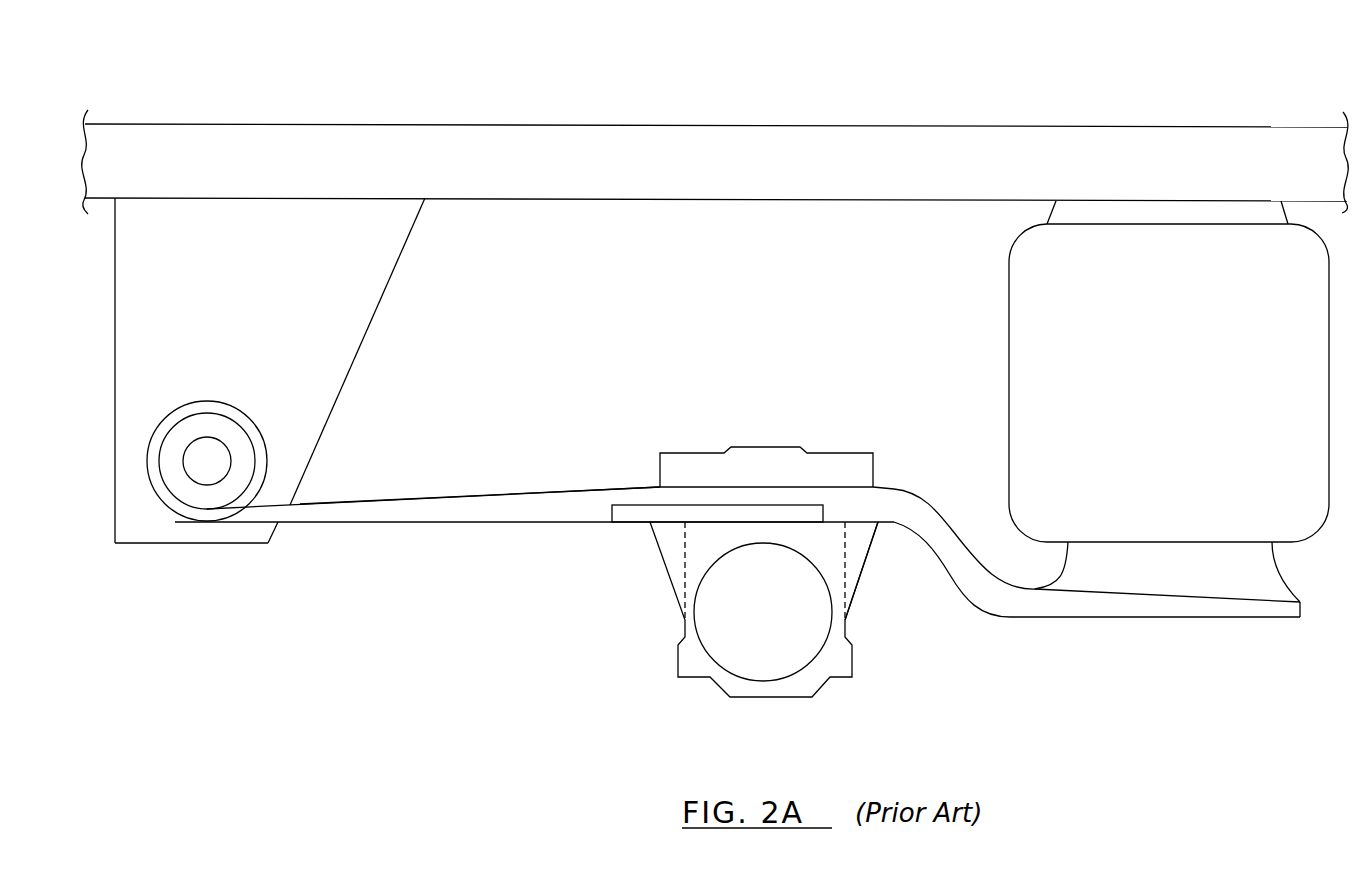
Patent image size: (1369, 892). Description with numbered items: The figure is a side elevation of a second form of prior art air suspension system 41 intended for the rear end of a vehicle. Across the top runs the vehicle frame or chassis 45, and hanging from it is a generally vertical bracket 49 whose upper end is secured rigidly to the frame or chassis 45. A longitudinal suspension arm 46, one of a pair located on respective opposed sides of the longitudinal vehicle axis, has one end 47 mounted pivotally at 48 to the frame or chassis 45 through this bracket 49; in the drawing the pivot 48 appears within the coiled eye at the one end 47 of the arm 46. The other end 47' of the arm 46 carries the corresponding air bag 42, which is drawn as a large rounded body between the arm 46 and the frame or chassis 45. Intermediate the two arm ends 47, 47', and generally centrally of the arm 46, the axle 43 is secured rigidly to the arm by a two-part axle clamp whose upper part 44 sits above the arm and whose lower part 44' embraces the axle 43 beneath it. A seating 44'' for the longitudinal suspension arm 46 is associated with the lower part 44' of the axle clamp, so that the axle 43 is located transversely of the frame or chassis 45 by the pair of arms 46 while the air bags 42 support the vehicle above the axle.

The prior art air suspension system 41 is at (515, 552).
The air bag 42 is at (1184, 401).
The axle 43 is at (774, 623).
The axle clamp 44 is at (742, 443).
The lower part of the axle clamp 44' is at (764, 637).
The seating 44'' is at (926, 602).
The frame or chassis 45 is at (733, 155).
The arm 46 is at (505, 507).
The one end of the arm 47 is at (190, 510).
The other end of the arm 47' is at (1167, 637).
The pivot 48 is at (202, 457).
The vertical bracket 49 is at (256, 308).